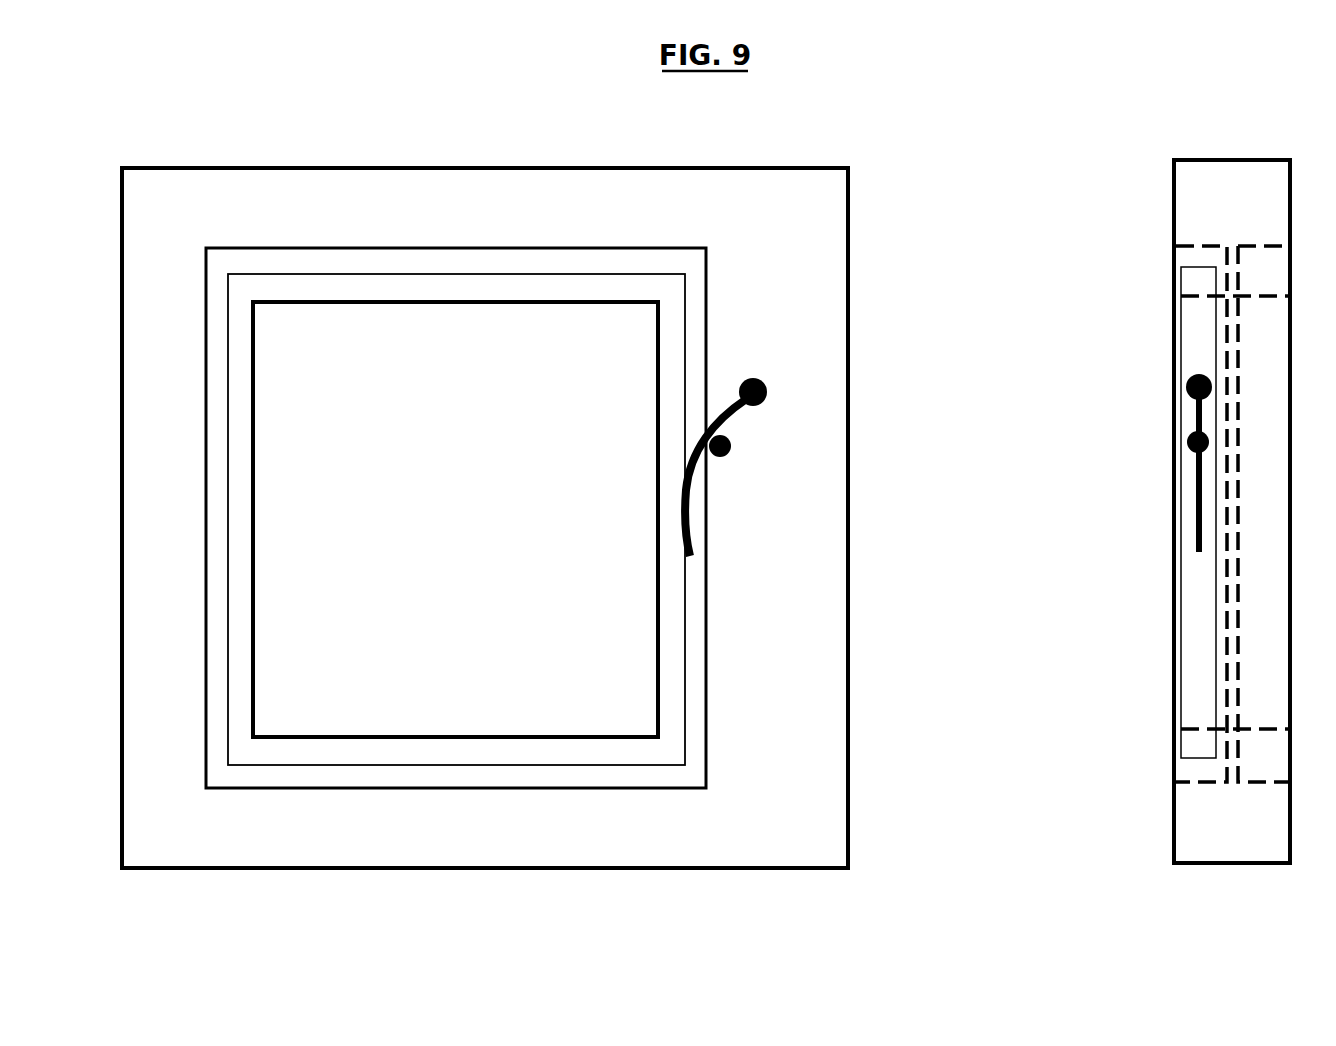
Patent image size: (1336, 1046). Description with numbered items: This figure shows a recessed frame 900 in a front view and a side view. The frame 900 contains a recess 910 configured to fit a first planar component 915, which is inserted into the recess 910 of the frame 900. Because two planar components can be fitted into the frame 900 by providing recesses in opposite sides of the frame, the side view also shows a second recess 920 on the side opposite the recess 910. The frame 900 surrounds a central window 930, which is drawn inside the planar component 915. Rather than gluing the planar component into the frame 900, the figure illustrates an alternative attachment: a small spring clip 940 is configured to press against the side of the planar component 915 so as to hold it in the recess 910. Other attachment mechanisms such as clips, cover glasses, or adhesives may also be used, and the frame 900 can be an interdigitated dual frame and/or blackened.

The recessed frame 900 is at (1172, 174).
The recess 910 is at (707, 246).
The first planar component 915 is at (1197, 265).
The recess 920 is at (1262, 786).
The window 930 is at (1203, 298).
The spring clip 940 is at (694, 498).